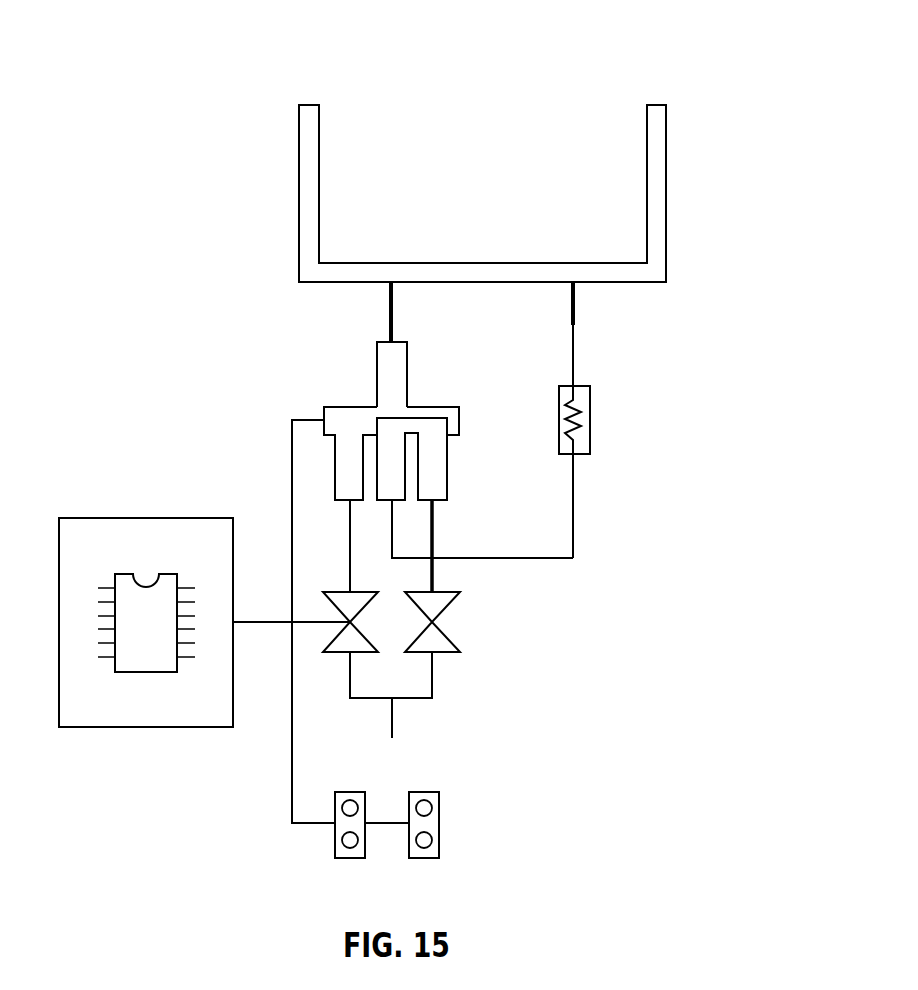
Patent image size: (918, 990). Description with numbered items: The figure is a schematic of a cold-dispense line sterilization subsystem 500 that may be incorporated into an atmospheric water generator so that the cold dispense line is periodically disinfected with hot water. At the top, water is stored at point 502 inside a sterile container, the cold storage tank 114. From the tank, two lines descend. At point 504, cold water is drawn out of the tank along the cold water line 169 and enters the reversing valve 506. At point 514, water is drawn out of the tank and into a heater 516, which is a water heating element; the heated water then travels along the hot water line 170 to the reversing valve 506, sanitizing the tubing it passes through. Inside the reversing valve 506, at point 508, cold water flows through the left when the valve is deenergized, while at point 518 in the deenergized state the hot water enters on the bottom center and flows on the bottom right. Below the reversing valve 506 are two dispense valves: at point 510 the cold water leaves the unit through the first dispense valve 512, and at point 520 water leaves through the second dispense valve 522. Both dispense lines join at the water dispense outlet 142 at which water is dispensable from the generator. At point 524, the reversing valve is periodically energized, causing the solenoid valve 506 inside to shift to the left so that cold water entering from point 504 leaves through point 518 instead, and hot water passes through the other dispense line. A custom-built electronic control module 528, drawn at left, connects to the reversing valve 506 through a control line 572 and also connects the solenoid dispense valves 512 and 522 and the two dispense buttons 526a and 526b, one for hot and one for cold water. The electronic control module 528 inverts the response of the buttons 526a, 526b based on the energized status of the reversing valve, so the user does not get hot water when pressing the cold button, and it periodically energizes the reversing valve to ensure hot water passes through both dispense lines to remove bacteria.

The cold-dispense line sterilization subsystem 500 is at (124, 140).
The cold storage tank 114 is at (666, 220).
The water storage point 502 is at (385, 155).
The cold water draw point 504 is at (380, 316).
The hot water draw point 514 is at (625, 316).
The cold water line 169 is at (393, 297).
The reversing valve 506 is at (424, 387).
The reversing valve energizing point 524 is at (350, 388).
The heater 516 is at (591, 438).
The hot water line 170 is at (574, 527).
The deenergized cold flow point 508 is at (345, 531).
The deenergized hot flow point 518 is at (498, 523).
The first dispense valve 512 is at (322, 630).
The second dispense valve 522 is at (452, 623).
The first dispense outlet point 510 is at (350, 731).
The second dispense outlet point 520 is at (475, 731).
The water dispense outlet 142 is at (396, 738).
The electronic control module 528 is at (146, 538).
The control line 572 is at (350, 575).
The dispense button 526a is at (343, 872).
The dispense button 526b is at (432, 872).